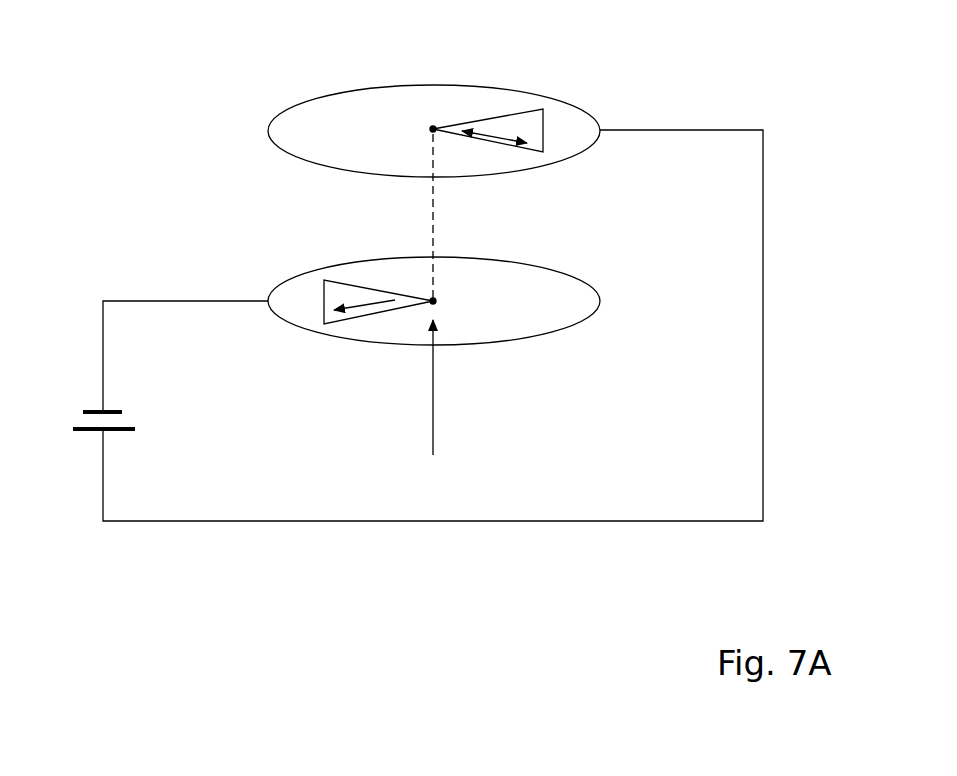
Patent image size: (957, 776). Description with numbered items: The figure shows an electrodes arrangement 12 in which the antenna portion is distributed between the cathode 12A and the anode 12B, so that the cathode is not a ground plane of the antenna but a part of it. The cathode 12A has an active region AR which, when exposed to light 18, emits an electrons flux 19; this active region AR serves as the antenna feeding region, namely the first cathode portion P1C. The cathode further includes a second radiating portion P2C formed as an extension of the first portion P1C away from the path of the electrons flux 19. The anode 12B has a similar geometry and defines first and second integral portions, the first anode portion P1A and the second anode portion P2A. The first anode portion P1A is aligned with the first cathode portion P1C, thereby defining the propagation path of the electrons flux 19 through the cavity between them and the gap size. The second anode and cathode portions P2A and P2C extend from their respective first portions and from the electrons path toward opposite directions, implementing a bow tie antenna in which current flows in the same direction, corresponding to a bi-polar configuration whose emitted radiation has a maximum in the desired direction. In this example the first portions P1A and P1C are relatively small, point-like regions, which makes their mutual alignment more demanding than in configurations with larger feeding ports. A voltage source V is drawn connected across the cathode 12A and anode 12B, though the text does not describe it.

The electrodes arrangement 12 is at (640, 90).
The cathode 12A is at (525, 282).
The anode 12B is at (298, 128).
The electrons flux 19 is at (435, 213).
The light 18 is at (430, 418).
The active region AR is at (431, 303).
The first anode portion P1A is at (432, 126).
The second anode portion P2A is at (528, 125).
The first cathode portion P1C is at (432, 298).
The second cathode portion P2C is at (338, 303).
The voltage source V is at (404, 325).